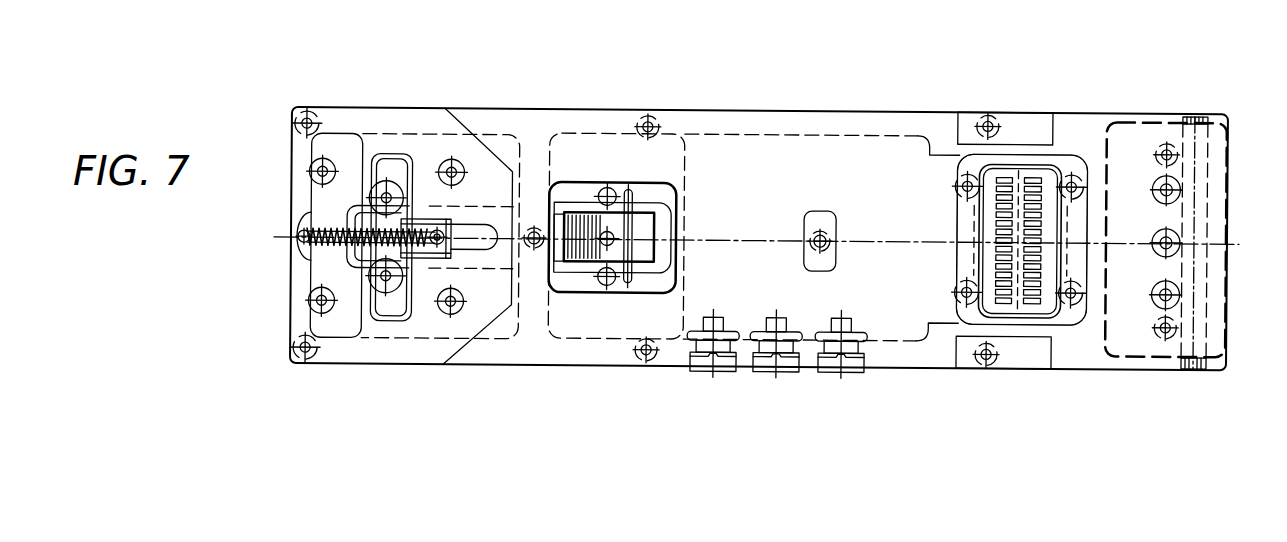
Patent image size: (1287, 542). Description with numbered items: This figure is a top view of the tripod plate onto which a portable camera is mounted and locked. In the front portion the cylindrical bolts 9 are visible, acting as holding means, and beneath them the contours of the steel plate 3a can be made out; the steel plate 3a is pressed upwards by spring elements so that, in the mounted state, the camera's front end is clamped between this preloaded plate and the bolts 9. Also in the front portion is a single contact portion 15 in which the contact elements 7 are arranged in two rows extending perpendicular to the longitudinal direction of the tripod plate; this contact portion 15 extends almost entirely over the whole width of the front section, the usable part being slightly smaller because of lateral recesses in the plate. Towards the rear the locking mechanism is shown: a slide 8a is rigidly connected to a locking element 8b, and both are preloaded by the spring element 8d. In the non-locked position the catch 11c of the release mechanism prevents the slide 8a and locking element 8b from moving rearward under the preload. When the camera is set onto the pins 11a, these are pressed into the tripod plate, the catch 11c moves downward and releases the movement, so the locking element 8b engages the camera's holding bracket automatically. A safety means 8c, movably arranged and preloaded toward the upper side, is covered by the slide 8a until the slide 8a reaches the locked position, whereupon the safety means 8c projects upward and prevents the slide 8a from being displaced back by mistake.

The steel plate 3a is at (1133, 140).
The contact elements 7 is at (993, 187).
The slide 8a is at (555, 215).
The locking element 8b is at (443, 258).
The safety means 8c is at (645, 223).
The spring element 8d is at (300, 236).
The cylindrical bolts 9 is at (1197, 117).
The pins 11a is at (383, 298).
The catch 11c is at (395, 162).
The contact portion 15 is at (1055, 320).